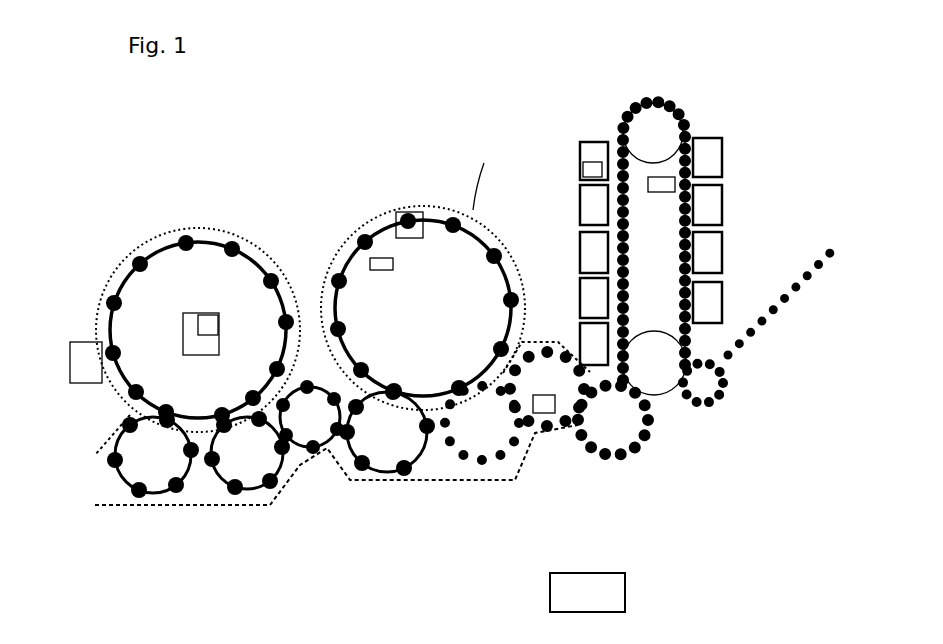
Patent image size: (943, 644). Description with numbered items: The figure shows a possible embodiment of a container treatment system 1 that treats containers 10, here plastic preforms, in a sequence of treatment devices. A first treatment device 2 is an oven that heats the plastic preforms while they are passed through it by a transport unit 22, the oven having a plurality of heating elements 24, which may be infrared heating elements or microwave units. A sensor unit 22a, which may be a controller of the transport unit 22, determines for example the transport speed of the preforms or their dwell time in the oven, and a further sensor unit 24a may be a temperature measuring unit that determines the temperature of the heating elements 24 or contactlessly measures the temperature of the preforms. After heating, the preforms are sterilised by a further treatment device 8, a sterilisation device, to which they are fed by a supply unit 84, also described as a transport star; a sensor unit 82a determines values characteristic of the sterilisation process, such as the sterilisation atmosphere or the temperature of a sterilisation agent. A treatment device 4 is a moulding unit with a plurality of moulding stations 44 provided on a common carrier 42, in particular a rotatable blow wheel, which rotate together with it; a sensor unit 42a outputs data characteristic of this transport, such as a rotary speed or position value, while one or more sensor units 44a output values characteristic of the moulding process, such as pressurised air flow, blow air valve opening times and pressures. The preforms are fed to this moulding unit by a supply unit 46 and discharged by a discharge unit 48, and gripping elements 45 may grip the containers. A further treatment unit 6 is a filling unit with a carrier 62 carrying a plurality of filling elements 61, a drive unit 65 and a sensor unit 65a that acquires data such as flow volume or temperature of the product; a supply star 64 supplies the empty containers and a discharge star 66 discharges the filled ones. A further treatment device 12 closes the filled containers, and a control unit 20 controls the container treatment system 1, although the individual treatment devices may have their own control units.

The container treatment system 1 is at (337, 108).
The first treatment device 2 is at (608, 103).
The treatment device 4 is at (353, 212).
The further treatment unit 6 is at (205, 212).
The further treatment device 8 is at (543, 318).
The containers 10 is at (737, 347).
The further treatment device 12 is at (82, 342).
The control unit 20 is at (587, 592).
The transport unit 22 is at (655, 127).
The sensor unit 22a is at (675, 192).
The heating elements 24 is at (593, 160).
The sensor unit 24a is at (583, 172).
The carrier 42 is at (472, 287).
The sensor unit 42a is at (362, 230).
The moulding stations 44 is at (330, 280).
The sensor units 44a is at (421, 213).
The gripping elements 45 is at (412, 463).
The supply unit 46 is at (502, 438).
The discharge unit 48 is at (373, 460).
The filling elements 61 is at (272, 273).
The carrier 62 is at (168, 270).
The supply star 64 is at (287, 463).
The drive unit 65 is at (195, 347).
The sensor unit 65a is at (215, 333).
The discharge star 66 is at (137, 463).
The sensor unit 82a is at (547, 408).
The supply unit 84 is at (603, 433).